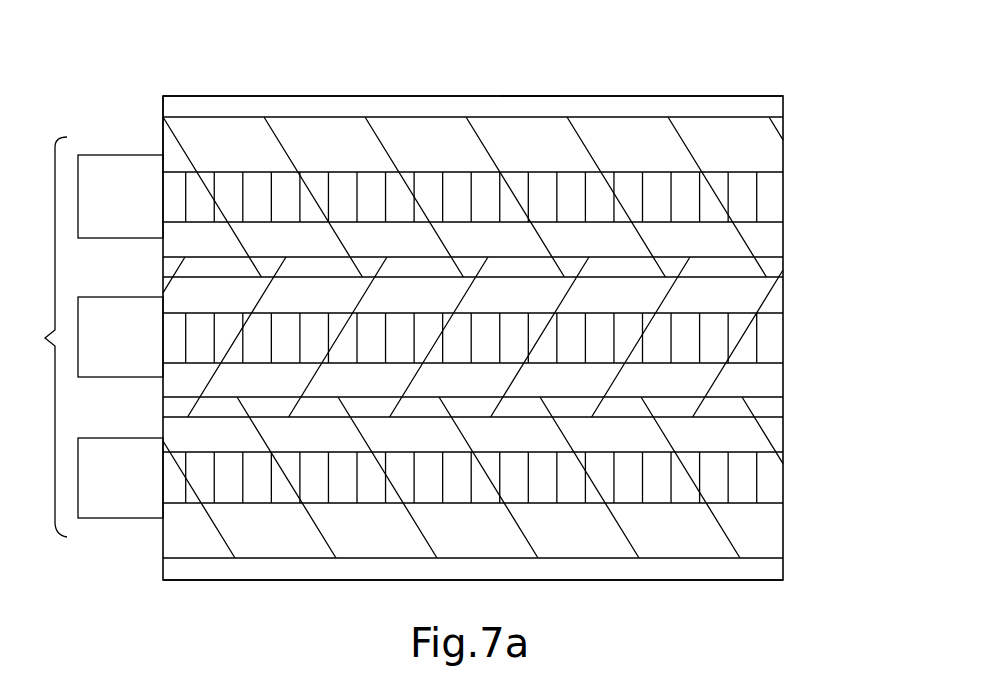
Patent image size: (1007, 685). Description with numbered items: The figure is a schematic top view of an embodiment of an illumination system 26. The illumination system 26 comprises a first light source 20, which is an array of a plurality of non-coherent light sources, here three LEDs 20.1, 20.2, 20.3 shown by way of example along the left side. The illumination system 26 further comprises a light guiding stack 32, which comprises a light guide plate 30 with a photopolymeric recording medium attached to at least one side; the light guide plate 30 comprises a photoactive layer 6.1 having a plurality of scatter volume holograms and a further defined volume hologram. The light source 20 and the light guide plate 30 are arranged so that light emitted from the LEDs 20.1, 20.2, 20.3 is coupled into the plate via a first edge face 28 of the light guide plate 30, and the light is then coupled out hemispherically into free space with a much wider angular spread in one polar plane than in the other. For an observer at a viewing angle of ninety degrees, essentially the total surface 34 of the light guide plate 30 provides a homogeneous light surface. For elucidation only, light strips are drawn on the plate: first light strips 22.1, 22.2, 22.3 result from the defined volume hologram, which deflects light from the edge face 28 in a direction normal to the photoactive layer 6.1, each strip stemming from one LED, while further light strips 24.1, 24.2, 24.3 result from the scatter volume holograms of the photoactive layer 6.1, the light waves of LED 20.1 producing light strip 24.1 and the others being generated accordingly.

The illumination system 26 is at (817, 76).
The light guiding stack 32 is at (713, 78).
The photoactive layer 6.1 is at (532, 96).
The light guide plate 30 is at (227, 96).
The first edge face 28 is at (162, 112).
The total surface 34 is at (259, 579).
The further light strip 24.1 is at (767, 138).
The first light strip 22.1 is at (772, 197).
The further light strip 24.2 is at (767, 380).
The first light strip 22.2 is at (772, 338).
The further light strip 24.3 is at (767, 530).
The first light strip 22.3 is at (772, 478).
The LED 20.1 is at (145, 211).
The LED 20.2 is at (145, 351).
The LED 20.3 is at (145, 491).
The first light source 20 is at (39, 337).